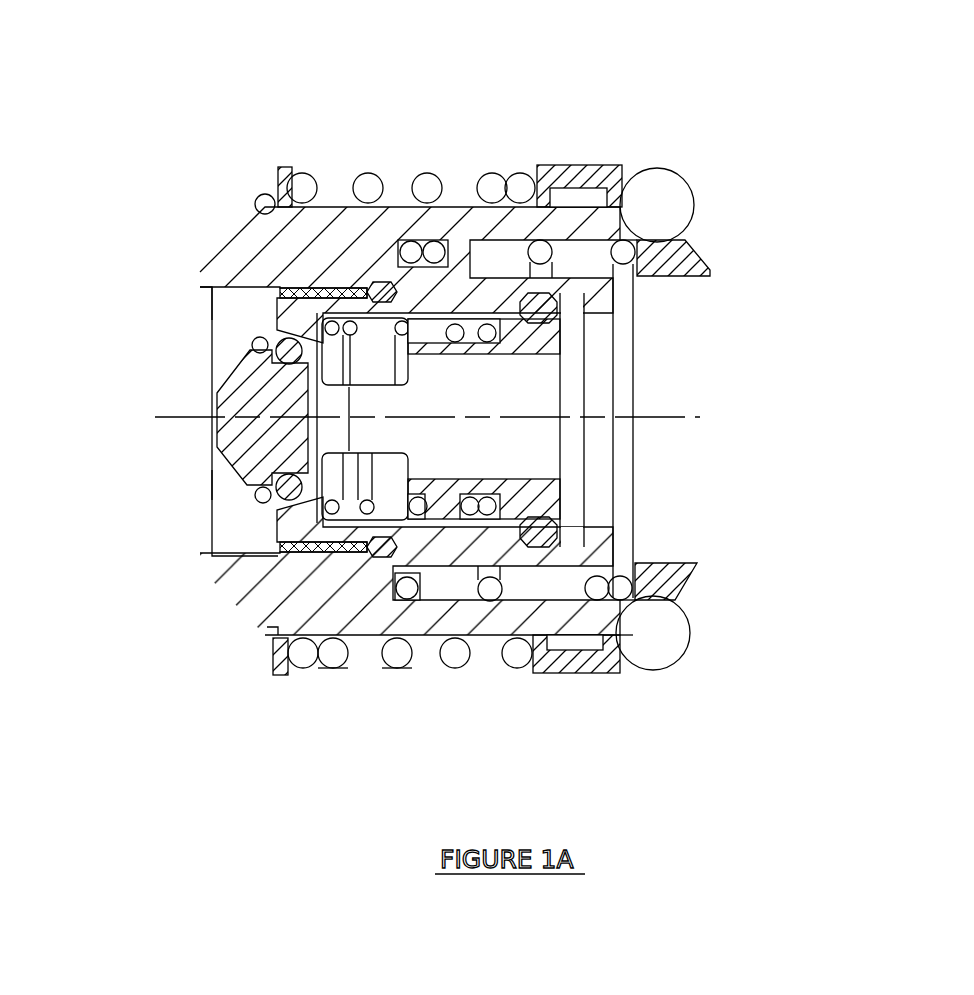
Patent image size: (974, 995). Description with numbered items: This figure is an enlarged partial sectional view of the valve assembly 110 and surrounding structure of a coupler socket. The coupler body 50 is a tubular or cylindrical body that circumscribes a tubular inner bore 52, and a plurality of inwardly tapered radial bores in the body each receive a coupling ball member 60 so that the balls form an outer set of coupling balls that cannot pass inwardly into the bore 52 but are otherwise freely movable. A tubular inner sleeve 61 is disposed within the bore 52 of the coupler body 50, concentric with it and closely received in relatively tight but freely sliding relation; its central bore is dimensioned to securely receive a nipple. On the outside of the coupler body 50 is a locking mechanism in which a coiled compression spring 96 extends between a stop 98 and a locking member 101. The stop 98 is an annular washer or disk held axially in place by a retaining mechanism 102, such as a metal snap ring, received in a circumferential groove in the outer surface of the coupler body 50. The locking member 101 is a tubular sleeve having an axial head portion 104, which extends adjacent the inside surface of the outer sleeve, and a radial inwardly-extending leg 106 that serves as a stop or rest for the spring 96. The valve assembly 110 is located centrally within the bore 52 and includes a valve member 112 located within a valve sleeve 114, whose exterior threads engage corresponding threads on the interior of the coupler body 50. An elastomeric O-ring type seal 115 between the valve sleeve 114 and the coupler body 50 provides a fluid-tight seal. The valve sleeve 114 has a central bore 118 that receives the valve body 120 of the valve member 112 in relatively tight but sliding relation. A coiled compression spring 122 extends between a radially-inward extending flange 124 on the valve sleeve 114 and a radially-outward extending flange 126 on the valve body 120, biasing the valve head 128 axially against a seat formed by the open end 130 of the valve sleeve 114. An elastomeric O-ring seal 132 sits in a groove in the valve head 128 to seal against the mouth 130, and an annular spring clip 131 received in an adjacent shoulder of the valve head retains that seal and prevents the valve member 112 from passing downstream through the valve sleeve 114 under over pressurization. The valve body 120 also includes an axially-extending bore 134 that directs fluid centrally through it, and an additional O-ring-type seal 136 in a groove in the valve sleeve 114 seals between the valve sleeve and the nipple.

The coupler body 50 is at (336, 235).
The inner bore 52 is at (170, 461).
The coupling ball member 60 is at (672, 640).
The inner sleeve 61 is at (668, 560).
The coiled compression spring 96 is at (455, 658).
The stop 98 is at (277, 680).
The locking member 101 is at (625, 645).
The retaining mechanism 102 is at (265, 193).
The axial head portion 104 is at (612, 660).
The radial inwardly-extending leg 106 is at (533, 655).
The valve assembly 110 is at (217, 483).
The valve member 112 is at (210, 295).
The valve sleeve 114 is at (518, 235).
The O-ring type seal 115 is at (382, 283).
The central bore 118 is at (577, 663).
The valve body 120 is at (528, 398).
The coiled compression spring 122 is at (565, 195).
The radially-inward extending flange 124 is at (322, 283).
The radially-outward extending flange 126 is at (628, 266).
The valve head 128 is at (225, 390).
The open end 130 is at (285, 335).
The annular spring clip 131 is at (322, 642).
The O-ring seal 132 is at (415, 636).
The axially-extending bore 134 is at (545, 448).
The O-ring-type seal 136 is at (605, 262).